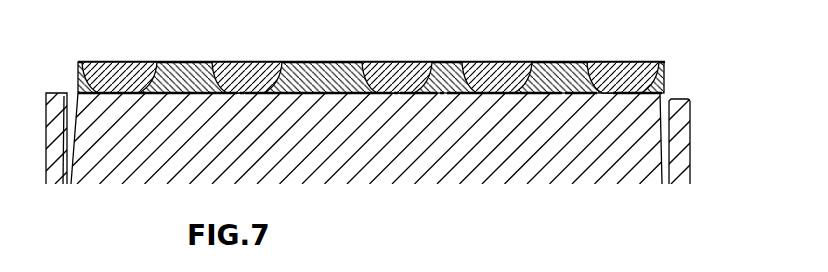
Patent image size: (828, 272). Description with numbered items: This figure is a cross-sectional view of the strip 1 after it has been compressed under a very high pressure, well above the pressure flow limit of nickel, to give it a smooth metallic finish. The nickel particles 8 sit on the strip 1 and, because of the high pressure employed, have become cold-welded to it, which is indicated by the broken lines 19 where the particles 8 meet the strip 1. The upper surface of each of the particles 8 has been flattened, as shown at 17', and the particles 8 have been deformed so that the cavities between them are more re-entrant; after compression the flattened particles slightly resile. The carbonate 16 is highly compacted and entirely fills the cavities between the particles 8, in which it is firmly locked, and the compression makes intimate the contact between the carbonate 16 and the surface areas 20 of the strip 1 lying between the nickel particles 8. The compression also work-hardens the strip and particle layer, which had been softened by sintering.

The strip 1 is at (53, 93).
The particles 8 is at (110, 76).
The carbonate 16 is at (447, 62).
The flattened upper surface of the particles 17' is at (372, 48).
The broken lines 19 is at (395, 95).
The surface areas of the strip 20 is at (567, 95).